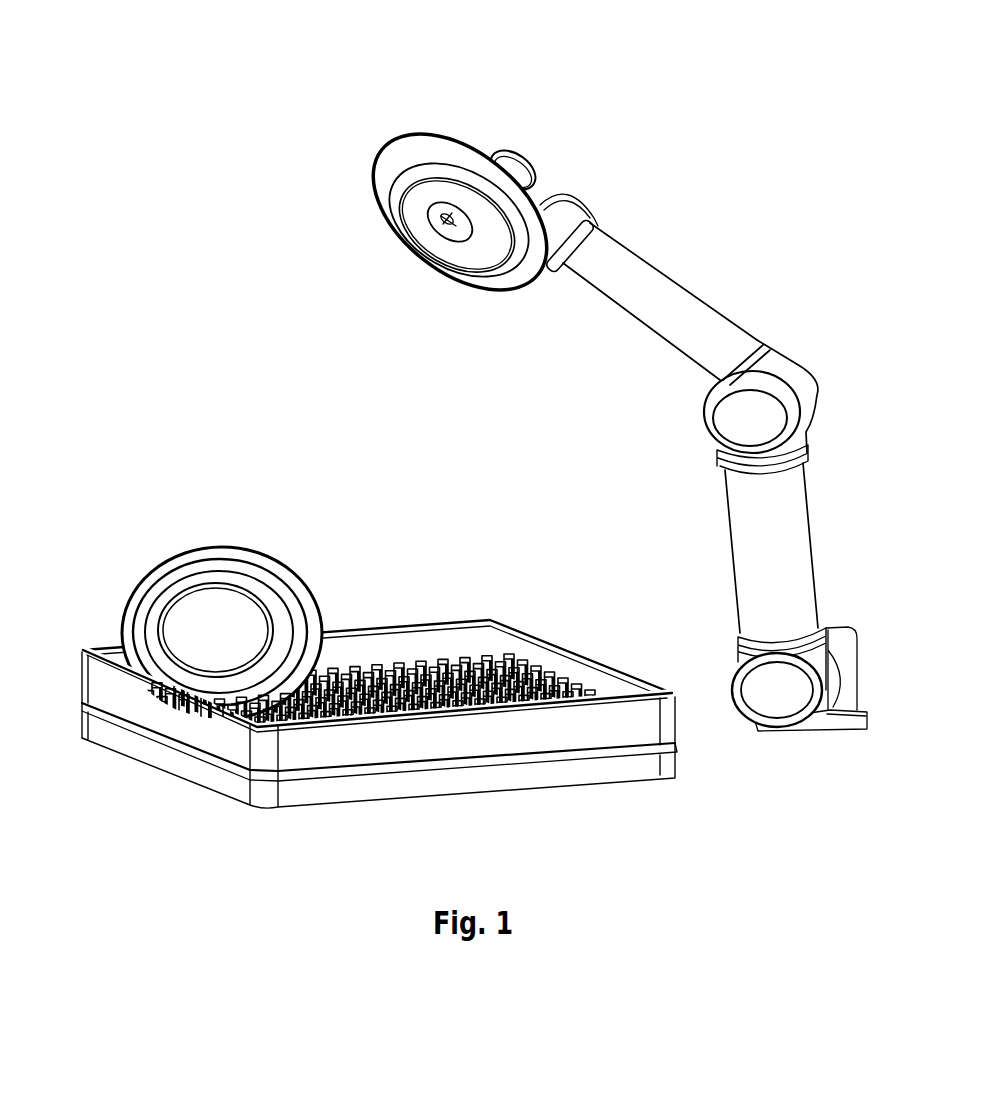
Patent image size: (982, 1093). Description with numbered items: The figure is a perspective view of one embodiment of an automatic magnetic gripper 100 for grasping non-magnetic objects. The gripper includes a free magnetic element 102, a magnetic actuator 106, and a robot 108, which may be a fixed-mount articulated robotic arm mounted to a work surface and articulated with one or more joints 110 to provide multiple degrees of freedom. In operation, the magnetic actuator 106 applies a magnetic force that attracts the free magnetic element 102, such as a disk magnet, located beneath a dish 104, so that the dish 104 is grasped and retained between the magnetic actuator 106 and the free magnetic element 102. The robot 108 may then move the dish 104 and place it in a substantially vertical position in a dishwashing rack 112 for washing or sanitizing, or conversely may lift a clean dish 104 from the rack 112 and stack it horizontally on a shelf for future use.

The automatic magnetic gripper 100 is at (88, 66).
The free magnetic element 102 is at (447, 234).
The dish 104 is at (384, 173).
The magnetic actuator 106 is at (512, 156).
The robot 108 is at (800, 505).
The joints 110 is at (806, 393).
The dishwashing rack 112 is at (419, 633).